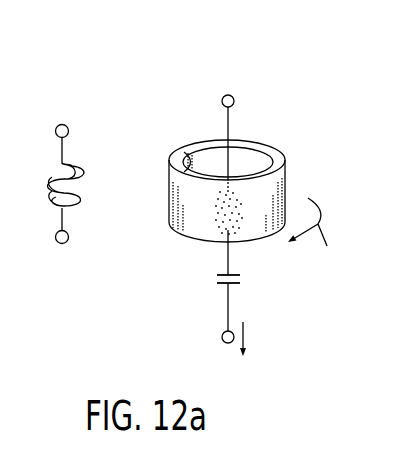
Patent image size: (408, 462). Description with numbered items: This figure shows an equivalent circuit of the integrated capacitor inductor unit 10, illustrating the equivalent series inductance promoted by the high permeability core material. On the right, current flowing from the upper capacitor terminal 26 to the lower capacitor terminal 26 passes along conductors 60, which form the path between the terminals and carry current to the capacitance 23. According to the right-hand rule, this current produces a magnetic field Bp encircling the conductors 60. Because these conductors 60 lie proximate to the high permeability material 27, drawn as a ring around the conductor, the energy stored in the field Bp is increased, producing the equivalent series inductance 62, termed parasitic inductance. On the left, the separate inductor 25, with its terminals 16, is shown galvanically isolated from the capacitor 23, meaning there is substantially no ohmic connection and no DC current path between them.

The integrated capacitor inductor unit 10 is at (120, 66).
The terminal 16 is at (66, 123).
The inductor 25 is at (51, 199).
The capacitor terminal 26 is at (222, 102).
The conductor 60 is at (232, 143).
The high permeability material 27 is at (175, 208).
The equivalent series inductance 62 is at (242, 232).
The capacitance 23 is at (238, 288).